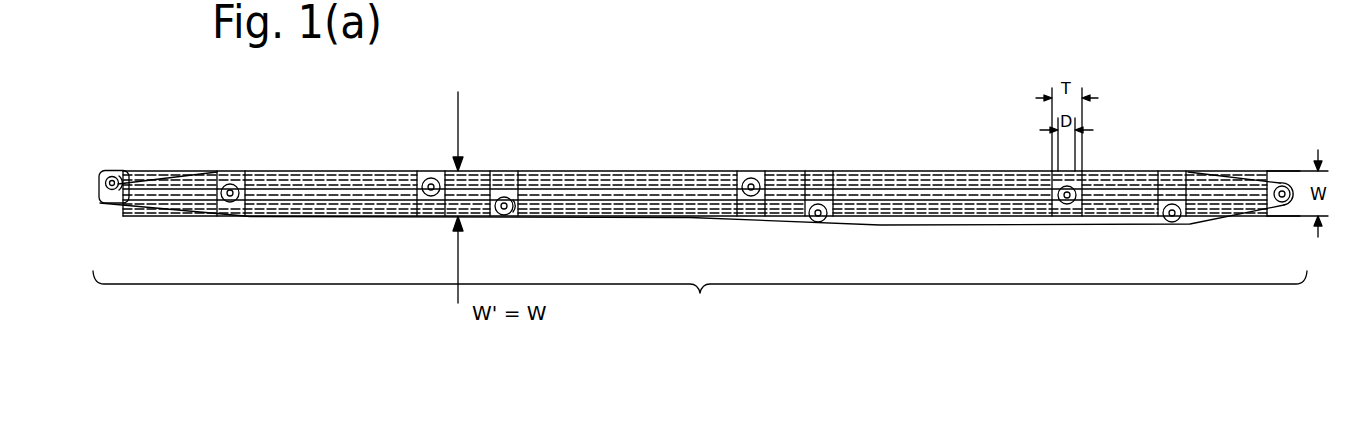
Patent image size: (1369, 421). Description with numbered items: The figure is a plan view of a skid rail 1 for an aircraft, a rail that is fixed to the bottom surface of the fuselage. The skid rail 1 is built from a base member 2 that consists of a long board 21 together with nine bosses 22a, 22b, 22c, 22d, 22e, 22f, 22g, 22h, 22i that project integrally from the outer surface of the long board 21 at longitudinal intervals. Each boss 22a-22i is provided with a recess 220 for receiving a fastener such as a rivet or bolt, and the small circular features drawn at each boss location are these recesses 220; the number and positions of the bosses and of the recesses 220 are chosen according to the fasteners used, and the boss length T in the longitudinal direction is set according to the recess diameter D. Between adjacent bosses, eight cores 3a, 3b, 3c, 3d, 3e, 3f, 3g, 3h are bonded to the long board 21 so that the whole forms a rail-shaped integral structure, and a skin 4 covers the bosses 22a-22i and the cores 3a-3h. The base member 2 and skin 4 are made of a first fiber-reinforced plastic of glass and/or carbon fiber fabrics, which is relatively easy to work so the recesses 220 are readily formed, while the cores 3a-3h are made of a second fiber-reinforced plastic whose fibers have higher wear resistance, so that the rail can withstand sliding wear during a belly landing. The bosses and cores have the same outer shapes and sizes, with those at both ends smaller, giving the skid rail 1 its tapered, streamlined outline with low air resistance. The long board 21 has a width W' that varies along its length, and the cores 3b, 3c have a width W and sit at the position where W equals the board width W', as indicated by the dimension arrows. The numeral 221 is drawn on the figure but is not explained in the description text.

The skid rail 1 is at (754, 78).
The base member 2 is at (700, 298).
The core 3a is at (170, 183).
The core 3b is at (336, 176).
The core 3c is at (466, 178).
The core 3d is at (628, 178).
The core 3e is at (784, 178).
The core 3f is at (942, 178).
The core 3g is at (1112, 177).
The core 3h is at (1222, 172).
The skin 4 is at (698, 171).
The long board 21 is at (920, 222).
The boss 22a is at (113, 200).
The boss 22b is at (223, 212).
The boss 22c is at (431, 205).
The boss 22d is at (493, 215).
The boss 22e is at (752, 212).
The boss 22f is at (810, 222).
The boss 22g is at (1072, 210).
The boss 22h is at (1166, 222).
The boss 22i is at (1262, 205).
The recess 220 is at (120, 192).
The boss 221 is at (100, 203).